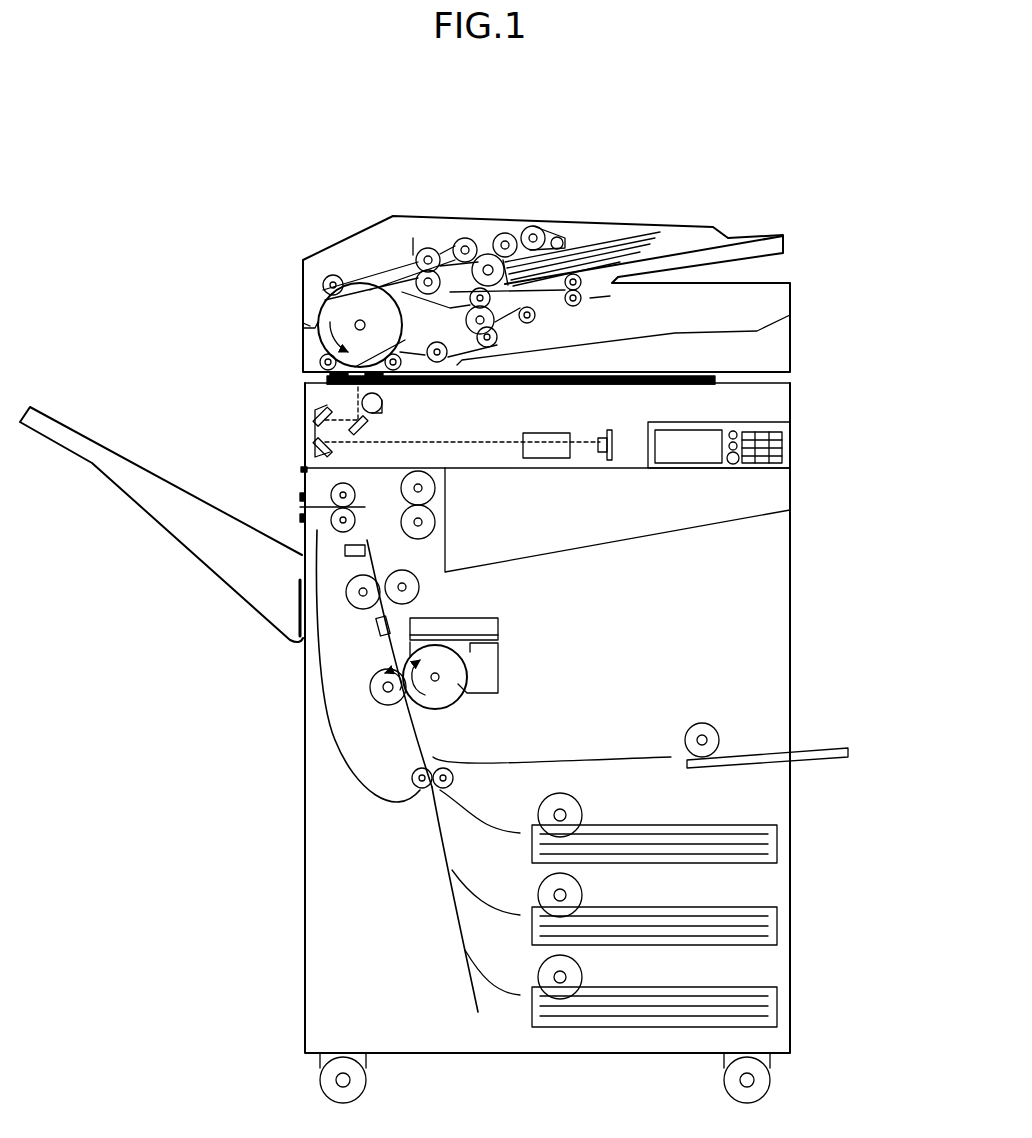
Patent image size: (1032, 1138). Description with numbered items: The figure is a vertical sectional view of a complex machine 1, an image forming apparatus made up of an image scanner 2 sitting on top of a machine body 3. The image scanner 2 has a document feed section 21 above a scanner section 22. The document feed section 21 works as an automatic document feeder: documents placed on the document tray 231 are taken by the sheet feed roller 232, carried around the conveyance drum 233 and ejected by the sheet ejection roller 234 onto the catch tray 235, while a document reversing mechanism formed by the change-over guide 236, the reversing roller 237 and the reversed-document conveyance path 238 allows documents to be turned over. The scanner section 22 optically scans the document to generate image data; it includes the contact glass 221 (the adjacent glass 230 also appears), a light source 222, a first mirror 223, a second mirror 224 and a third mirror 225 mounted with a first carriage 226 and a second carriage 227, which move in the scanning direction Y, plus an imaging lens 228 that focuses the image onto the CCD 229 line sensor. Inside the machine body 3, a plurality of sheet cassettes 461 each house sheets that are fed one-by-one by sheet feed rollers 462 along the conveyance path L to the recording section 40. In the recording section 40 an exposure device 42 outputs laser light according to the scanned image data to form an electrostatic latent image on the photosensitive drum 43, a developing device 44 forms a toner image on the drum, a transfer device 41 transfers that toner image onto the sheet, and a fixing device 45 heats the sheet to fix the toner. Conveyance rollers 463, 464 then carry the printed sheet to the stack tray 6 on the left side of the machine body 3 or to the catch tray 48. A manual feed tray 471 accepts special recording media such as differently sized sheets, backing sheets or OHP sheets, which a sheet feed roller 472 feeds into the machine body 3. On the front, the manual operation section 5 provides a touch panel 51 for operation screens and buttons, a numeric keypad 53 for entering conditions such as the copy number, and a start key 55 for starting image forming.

The complex machine 1 is at (248, 225).
The image scanner 2 is at (845, 327).
The machine body 3 is at (775, 627).
The manual operation section 5 is at (740, 466).
The stack tray 6 is at (210, 575).
The document feed section 21 is at (793, 348).
The scanner section 22 is at (793, 395).
The recording section 40 is at (352, 677).
The transfer device 41 is at (375, 706).
The exposure device 42 is at (500, 628).
The photosensitive drum 43 is at (458, 700).
The developing device 44 is at (500, 669).
The fixing device 45 is at (362, 604).
The catch tray 48 is at (690, 537).
The touch panel 51 is at (685, 432).
The numeric keypad 53 is at (795, 437).
The start key 55 is at (728, 460).
The contact glass 221 is at (538, 390).
The light source 222 is at (372, 428).
The first mirror 223 is at (360, 430).
The second mirror 224 is at (318, 411).
The third mirror 225 is at (318, 445).
The first carriage 226 is at (382, 402).
The second carriage 227 is at (303, 470).
The imaging lens 228 is at (545, 460).
The CCD 229 is at (608, 462).
The contact glass 230 is at (327, 381).
The document tray 231 is at (660, 245).
The sheet feed roller 232 is at (552, 232).
The conveyance drum 233 is at (328, 305).
The sheet ejection roller 234 is at (508, 338).
The catch tray 235 is at (678, 334).
The change-over guide 236 is at (500, 325).
The reversing roller 237 is at (588, 296).
The reversed-document conveyance path 238 is at (412, 290).
The sheet cassettes 461 is at (775, 858).
The sheet feed rollers 462 is at (608, 964).
The conveyance rollers 463 is at (437, 488).
The conveyance rollers 464 is at (303, 496).
The manual feed tray 471 is at (838, 748).
The sheet feed roller 472 is at (707, 722).
The conveyance path L is at (312, 660).
The scanning direction Y is at (475, 395).